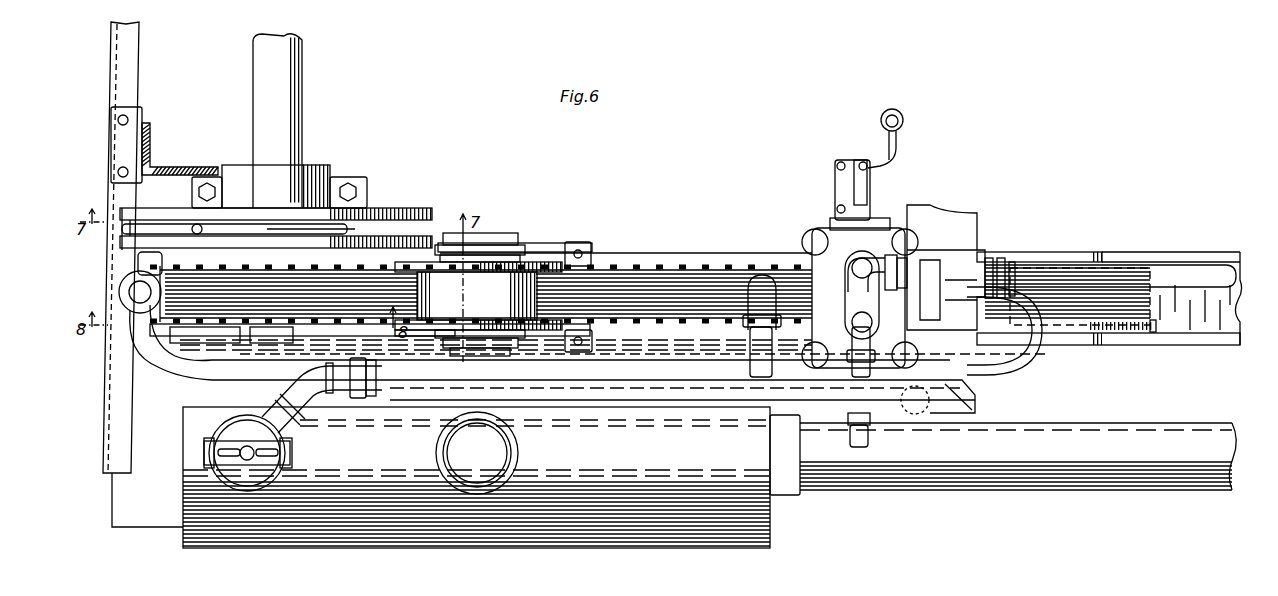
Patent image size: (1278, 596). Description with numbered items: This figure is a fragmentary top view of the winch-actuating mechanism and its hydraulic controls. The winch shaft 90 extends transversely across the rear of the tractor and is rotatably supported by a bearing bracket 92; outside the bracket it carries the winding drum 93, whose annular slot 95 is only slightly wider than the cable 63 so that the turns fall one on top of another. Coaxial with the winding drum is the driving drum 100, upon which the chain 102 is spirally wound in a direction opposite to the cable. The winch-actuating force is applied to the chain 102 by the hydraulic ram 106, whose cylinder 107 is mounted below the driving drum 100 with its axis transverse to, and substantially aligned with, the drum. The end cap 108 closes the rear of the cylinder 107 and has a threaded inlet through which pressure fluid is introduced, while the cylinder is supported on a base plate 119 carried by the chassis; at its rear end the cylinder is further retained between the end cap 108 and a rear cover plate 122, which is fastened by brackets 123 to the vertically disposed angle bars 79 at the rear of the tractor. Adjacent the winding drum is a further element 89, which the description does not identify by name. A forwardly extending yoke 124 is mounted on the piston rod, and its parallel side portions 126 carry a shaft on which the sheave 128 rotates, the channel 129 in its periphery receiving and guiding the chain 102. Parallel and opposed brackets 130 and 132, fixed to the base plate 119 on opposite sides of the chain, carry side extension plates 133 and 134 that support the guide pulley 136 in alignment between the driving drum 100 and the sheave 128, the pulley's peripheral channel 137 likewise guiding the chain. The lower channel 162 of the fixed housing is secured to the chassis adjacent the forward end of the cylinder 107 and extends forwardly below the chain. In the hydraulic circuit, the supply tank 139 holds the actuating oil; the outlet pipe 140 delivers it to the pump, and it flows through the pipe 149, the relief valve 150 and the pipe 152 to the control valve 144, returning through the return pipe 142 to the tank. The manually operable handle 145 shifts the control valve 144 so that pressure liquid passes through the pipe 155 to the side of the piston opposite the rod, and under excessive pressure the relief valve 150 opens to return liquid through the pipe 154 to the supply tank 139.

The cable 63 is at (334, 229).
The angle bar 79 is at (183, 167).
The lower plate 89 is at (398, 202).
The shaft 90 is at (298, 99).
The bearing bracket 92 is at (331, 180).
The winding drum 93 is at (440, 212).
The annular slot 95 is at (127, 225).
The driving drum 100 is at (140, 262).
The chain 102 is at (318, 324).
The hydraulic ram 106 is at (720, 250).
The cylinder 107 is at (750, 248).
The end cap 108 is at (128, 292).
The base plate 119 is at (134, 522).
The rear cover plate 122 is at (118, 413).
The bracket 123 is at (128, 134).
The yoke 124 is at (1100, 252).
The side portion 126 is at (1047, 257).
The sheave 128 is at (1156, 327).
The channel 129 is at (1153, 321).
The bracket 130 is at (545, 354).
The bracket 132 is at (555, 243).
The side extension plate 133 is at (502, 356).
The side extension plate 134 is at (500, 247).
The guide pulley 136 is at (515, 280).
The peripheral channel 137 is at (430, 324).
The supply tank 139 is at (772, 536).
The outlet pipe 140 is at (1045, 484).
The return pipe 142 is at (396, 410).
The control valve 144 is at (893, 228).
The handle 145 is at (905, 118).
The pipe 149 is at (1188, 260).
The relief valve 150 is at (978, 243).
The pipe 152 is at (888, 255).
The pipe 154 is at (972, 403).
The pipe 155 is at (197, 370).
The lower channel 162 is at (1223, 340).